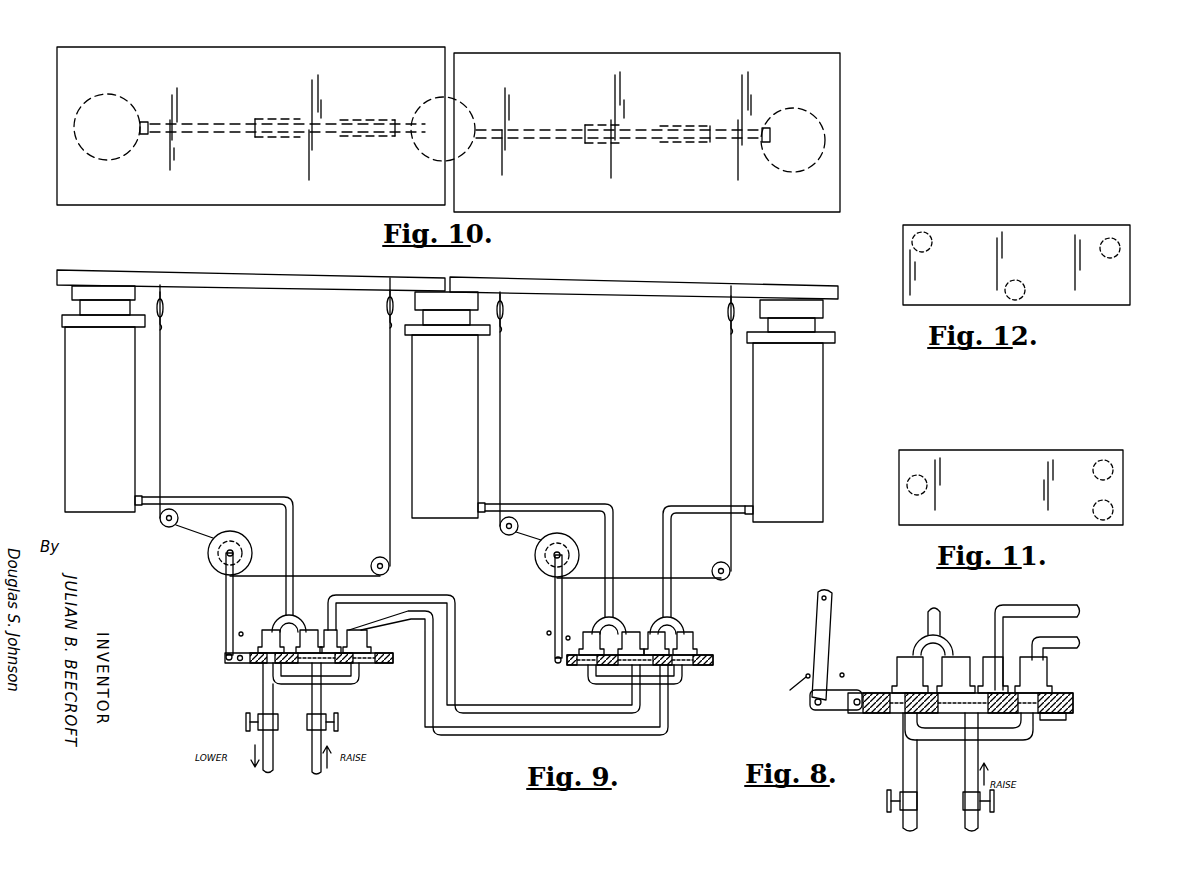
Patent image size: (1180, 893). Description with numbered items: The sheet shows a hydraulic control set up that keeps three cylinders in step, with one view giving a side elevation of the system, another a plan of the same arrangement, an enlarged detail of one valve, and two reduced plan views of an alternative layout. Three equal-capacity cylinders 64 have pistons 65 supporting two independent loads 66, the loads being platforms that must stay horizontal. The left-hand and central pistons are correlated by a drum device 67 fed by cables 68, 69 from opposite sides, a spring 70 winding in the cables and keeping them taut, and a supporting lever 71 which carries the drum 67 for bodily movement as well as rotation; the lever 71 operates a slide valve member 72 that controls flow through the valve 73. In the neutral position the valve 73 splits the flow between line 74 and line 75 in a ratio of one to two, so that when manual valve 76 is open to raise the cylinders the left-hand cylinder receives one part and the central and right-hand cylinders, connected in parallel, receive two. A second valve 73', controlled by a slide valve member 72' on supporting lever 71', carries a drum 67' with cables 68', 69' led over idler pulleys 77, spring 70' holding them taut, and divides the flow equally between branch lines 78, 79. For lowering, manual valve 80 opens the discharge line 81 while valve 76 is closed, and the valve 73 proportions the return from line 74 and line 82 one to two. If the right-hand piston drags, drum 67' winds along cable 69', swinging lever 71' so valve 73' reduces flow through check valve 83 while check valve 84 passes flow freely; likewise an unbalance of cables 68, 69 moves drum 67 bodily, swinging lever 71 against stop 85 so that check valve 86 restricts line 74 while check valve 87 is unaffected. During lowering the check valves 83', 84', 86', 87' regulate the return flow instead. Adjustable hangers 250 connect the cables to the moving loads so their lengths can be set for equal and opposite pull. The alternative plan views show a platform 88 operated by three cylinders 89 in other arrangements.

In FIG. 10, the hydraulic cylinder 64 is at (92, 146).
In FIG. 9, the hydraulic cylinder 64 is at (78, 410).
In FIG. 9, the piston 65 is at (78, 306).
In FIG. 10, the load 66 is at (222, 200).
In FIG. 9, the load 66 is at (291, 271).
In FIG. 9, the drum device 67 is at (205, 553).
In FIG. 9, the drum 67' is at (534, 555).
In FIG. 9, the cable 68 is at (177, 401).
In FIG. 9, the cable 68' is at (708, 428).
In FIG. 9, the cable 69 is at (370, 422).
In FIG. 9, the cable 69' is at (522, 409).
In FIG. 9, the spring 70 is at (252, 532).
In FIG. 9, the spring 70' is at (584, 539).
In FIG. 9, the supporting lever 71 is at (209, 606).
In FIG. 8, the supporting lever 71 is at (839, 645).
In FIG. 9, the supporting lever 71' is at (536, 609).
In FIG. 9, the slide valve member 72 is at (309, 671).
In FIG. 8, the slide valve member 72 is at (971, 693).
In FIG. 9, the slide valve member 72' is at (654, 672).
In FIG. 9, the valve 73 is at (390, 637).
In FIG. 8, the valve 73 is at (1058, 729).
In FIG. 9, the second valve 73' is at (723, 641).
In FIG. 9, the line 74 is at (229, 498).
In FIG. 8, the line 74 is at (927, 618).
In FIG. 9, the line 75 is at (345, 594).
In FIG. 8, the line 75 is at (1048, 606).
In FIG. 9, the manual valve 76 is at (338, 722).
In FIG. 8, the manual valve 76 is at (994, 804).
In FIG. 9, the idler pulley 77 is at (161, 524).
In FIG. 9, the branch line 78 is at (686, 505).
In FIG. 9, the branch line 79 is at (574, 509).
In FIG. 9, the manual valve 80 is at (246, 722).
In FIG. 8, the manual valve 80 is at (887, 803).
In FIG. 9, the discharge line 81 is at (263, 768).
In FIG. 8, the discharge line 81 is at (908, 776).
In FIG. 9, the line 82 is at (460, 737).
In FIG. 8, the line 82 is at (1080, 645).
In FIG. 9, the check valve 83 is at (619, 621).
In FIG. 9, the check valve 83' is at (587, 625).
In FIG. 9, the check valve 84 is at (673, 620).
In FIG. 9, the check valve 84' is at (698, 629).
In FIG. 9, the stop 85 is at (239, 635).
In FIG. 8, the stop 85 is at (844, 674).
In FIG. 9, the check valve 86 is at (297, 623).
In FIG. 8, the check valve 86 is at (944, 655).
In FIG. 9, the check valve 86' is at (404, 628).
In FIG. 8, the check valve 86' is at (909, 661).
In FIG. 9, the check valve 87 is at (339, 628).
In FIG. 8, the check valve 87 is at (1001, 661).
In FIG. 9, the check valve 87' is at (505, 658).
In FIG. 8, the check valve 87' is at (1059, 655).
In FIG. 12, the load or platform 88 is at (1030, 240).
In FIG. 11, the load or platform 88 is at (1005, 455).
In FIG. 12, the cylinder 89 is at (928, 236).
In FIG. 11, the cylinder 89 is at (906, 486).
In FIG. 9, the adjustable hanger 250 is at (165, 307).